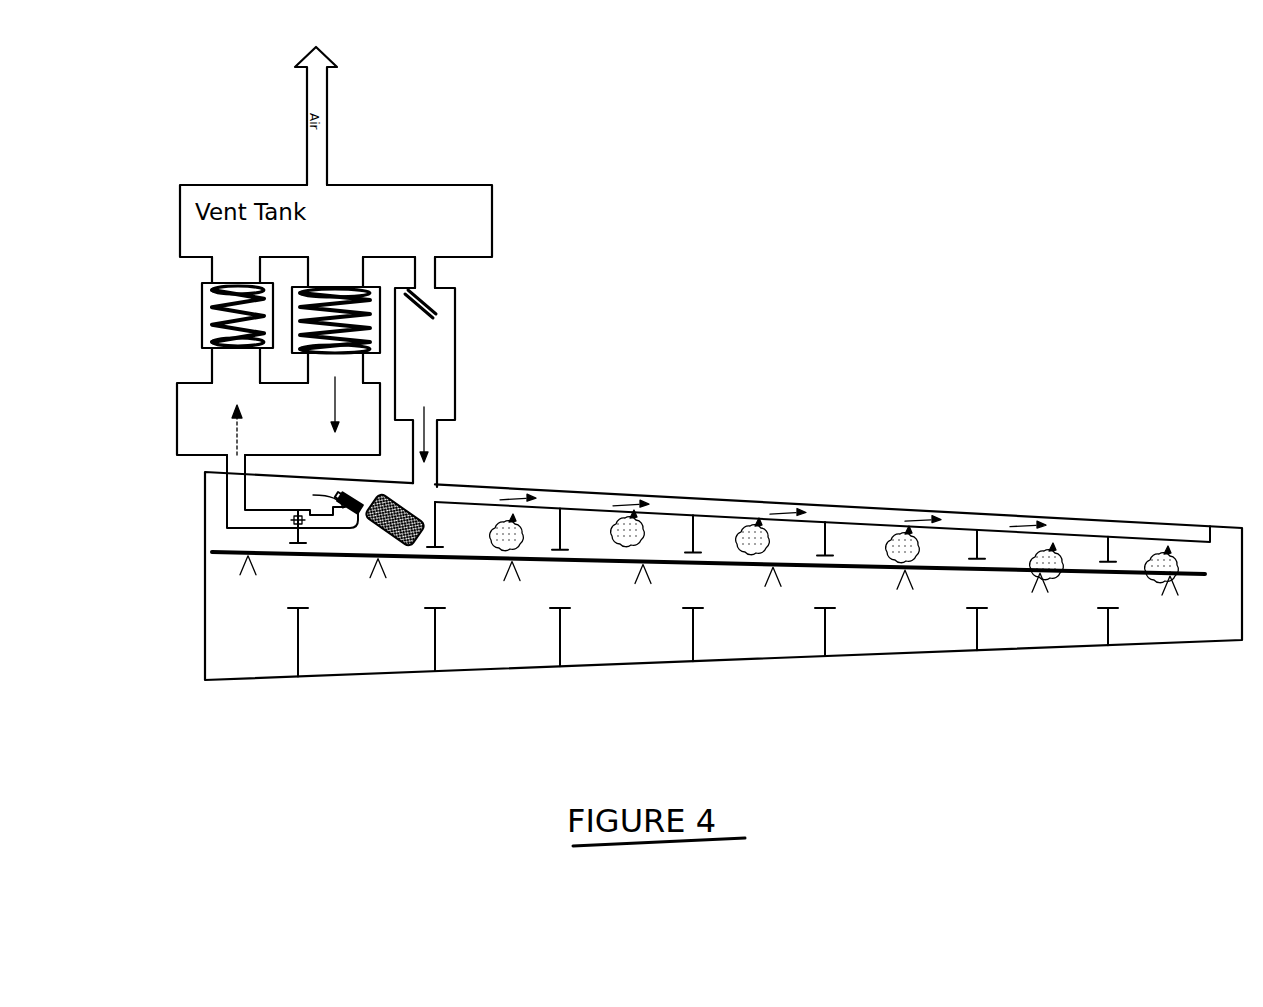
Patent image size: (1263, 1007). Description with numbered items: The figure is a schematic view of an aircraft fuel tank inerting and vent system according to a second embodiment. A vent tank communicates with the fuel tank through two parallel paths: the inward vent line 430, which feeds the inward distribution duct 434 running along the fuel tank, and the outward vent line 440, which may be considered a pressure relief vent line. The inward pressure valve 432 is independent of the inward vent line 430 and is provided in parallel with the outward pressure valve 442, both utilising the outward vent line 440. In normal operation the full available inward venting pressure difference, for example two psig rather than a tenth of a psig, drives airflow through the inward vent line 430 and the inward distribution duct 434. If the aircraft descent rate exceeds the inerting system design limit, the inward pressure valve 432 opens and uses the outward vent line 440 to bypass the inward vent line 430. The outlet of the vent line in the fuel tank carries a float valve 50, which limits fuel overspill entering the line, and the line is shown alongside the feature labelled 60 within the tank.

The inward pressure valve 432 is at (344, 270).
The outward pressure valve 442 is at (192, 335).
The outward vent line 440 is at (176, 427).
The inward vent line 430 is at (437, 437).
The inward distribution duct 434 is at (576, 484).
The conveyor belt 60 is at (300, 562).
The float valve 50 is at (405, 552).